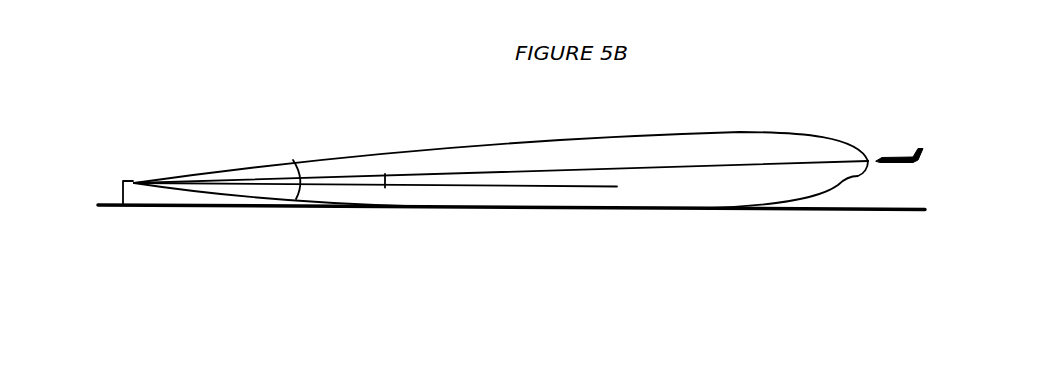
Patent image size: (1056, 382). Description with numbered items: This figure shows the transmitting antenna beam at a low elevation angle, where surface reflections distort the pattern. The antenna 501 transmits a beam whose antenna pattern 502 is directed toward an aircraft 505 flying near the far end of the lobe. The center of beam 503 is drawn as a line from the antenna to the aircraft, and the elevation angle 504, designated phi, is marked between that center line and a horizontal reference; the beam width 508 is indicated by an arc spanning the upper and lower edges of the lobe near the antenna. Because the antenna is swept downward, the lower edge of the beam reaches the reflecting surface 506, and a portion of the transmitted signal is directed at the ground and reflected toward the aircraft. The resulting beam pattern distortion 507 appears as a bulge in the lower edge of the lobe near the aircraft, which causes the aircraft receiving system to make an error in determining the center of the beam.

The antenna 501 is at (139, 186).
The antenna pattern 502 is at (553, 142).
The center of beam 503 is at (448, 174).
The elevation angle 504 is at (388, 180).
The aircraft 505 is at (901, 158).
The reflecting surface 506 is at (640, 209).
The beam pattern distortion 507 is at (851, 180).
The beam width 508 is at (294, 192).